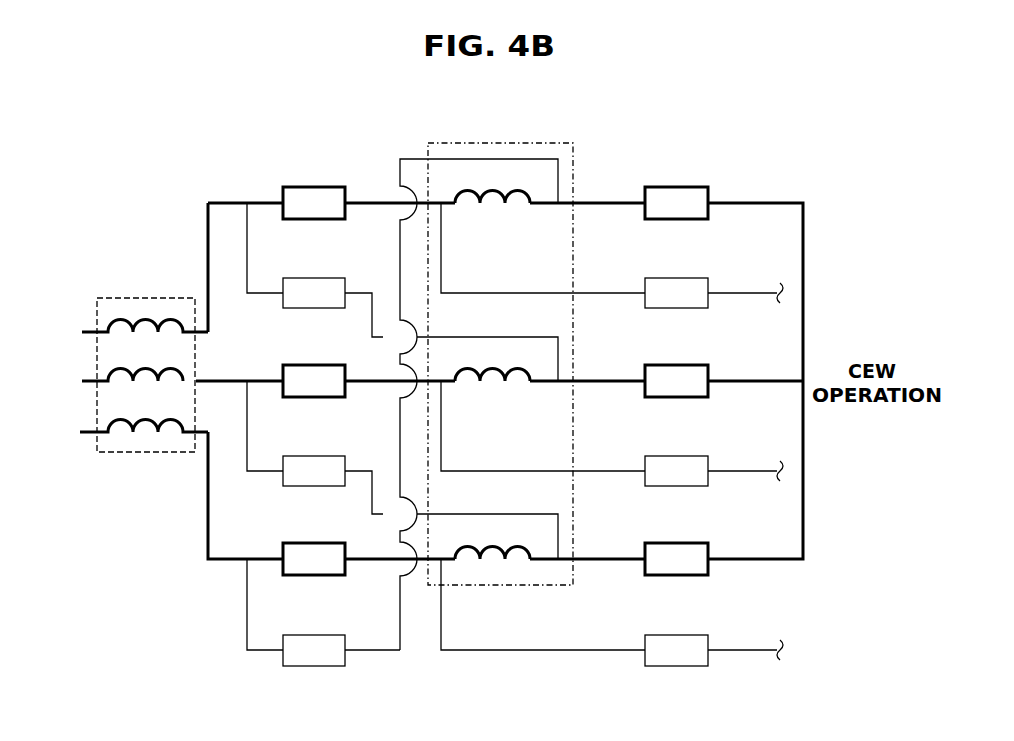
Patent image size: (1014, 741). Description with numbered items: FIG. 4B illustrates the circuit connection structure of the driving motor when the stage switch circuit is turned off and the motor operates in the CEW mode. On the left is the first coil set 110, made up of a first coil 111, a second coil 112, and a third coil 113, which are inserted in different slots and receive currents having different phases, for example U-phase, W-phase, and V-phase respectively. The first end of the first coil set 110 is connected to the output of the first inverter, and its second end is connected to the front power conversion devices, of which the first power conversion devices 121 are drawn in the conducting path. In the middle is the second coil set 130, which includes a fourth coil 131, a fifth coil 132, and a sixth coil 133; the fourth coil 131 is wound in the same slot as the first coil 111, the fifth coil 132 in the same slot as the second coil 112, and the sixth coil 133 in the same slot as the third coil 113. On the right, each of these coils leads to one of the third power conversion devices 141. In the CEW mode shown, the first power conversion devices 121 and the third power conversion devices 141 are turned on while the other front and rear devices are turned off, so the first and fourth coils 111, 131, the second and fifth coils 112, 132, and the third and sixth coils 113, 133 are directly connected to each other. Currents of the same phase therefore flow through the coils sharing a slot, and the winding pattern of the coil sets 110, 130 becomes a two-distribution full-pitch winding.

The first coil set 110 is at (145, 452).
The first coil 111 is at (114, 324).
The second coil 112 is at (114, 375).
The third coil 113 is at (114, 425).
The first power conversion devices 121 is at (284, 188).
The second coil set 130 is at (500, 143).
The fourth coil 131 is at (497, 192).
The fifth coil 132 is at (497, 370).
The sixth coil 133 is at (497, 548).
The third power conversion devices 141 is at (708, 188).